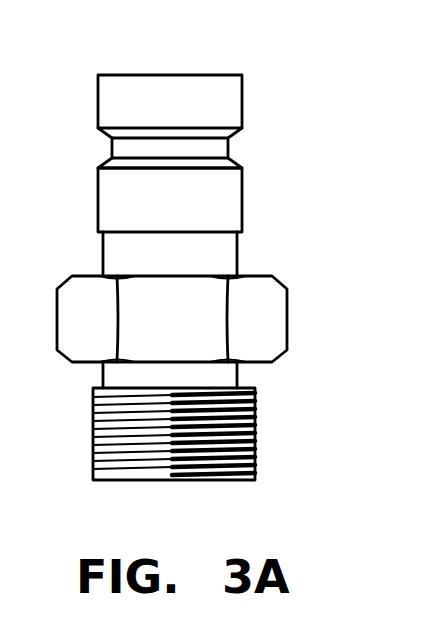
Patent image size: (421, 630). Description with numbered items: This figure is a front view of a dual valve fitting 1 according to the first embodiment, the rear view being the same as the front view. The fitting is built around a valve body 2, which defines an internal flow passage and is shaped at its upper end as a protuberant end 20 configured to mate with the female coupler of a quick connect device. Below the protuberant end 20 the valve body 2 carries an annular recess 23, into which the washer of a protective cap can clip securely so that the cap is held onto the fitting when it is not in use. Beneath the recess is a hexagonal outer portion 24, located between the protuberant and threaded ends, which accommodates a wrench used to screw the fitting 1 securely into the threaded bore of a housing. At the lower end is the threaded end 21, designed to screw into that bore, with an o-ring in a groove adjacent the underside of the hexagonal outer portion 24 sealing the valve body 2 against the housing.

The dual valve fitting 1 is at (106, 72).
The valve body 2 is at (228, 92).
The protuberant end 20 is at (225, 210).
The annular recess 23 is at (240, 253).
The hexagonal outer portion 24 is at (272, 317).
The threaded end 21 is at (110, 430).